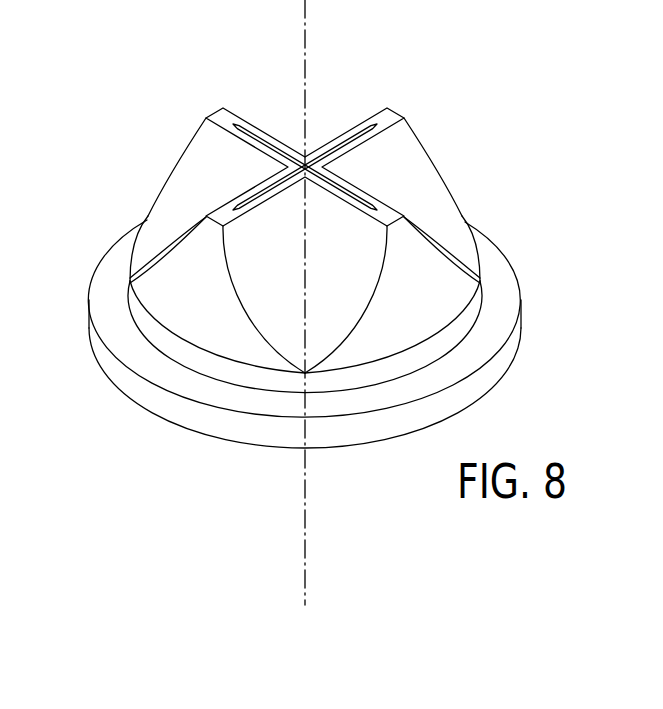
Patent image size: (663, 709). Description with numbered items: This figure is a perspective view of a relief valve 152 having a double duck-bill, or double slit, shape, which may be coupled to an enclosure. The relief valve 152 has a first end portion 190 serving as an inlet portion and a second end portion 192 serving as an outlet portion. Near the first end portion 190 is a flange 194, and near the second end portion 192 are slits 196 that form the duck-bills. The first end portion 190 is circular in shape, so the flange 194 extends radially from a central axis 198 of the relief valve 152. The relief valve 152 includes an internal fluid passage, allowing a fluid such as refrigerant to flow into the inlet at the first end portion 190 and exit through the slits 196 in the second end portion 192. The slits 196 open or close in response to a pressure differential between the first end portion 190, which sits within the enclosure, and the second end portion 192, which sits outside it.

The relief valve 152 is at (275, 209).
The first end portion 190 is at (273, 367).
The second end portion 192 is at (318, 125).
The flange 194 is at (180, 393).
The slits 196 is at (327, 147).
The central axis 198 is at (306, 72).